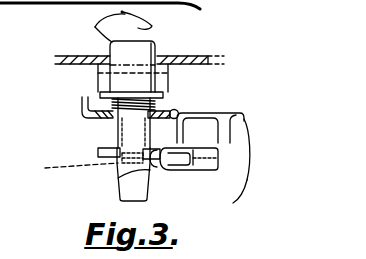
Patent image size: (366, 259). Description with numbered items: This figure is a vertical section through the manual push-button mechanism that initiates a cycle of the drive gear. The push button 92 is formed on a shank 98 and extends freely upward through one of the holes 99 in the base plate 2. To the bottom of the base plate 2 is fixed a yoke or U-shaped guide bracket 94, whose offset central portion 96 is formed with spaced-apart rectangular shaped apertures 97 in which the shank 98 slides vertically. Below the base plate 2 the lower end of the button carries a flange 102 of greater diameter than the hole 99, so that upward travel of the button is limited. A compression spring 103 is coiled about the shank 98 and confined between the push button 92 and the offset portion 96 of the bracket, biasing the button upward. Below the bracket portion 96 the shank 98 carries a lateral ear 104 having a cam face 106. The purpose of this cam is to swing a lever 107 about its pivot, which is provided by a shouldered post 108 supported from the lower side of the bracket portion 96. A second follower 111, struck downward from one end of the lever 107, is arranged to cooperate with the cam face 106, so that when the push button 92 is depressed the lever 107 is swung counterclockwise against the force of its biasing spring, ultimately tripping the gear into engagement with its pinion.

The base plate 2 is at (197, 55).
The push button 92 is at (152, 41).
The U-shaped guide bracket 94 is at (96, 77).
The offset central portion 96 is at (90, 128).
The rectangular shaped apertures 97 is at (152, 127).
The shank 98 is at (108, 135).
The holes 99 is at (118, 53).
The flange 102 is at (100, 93).
The compression spring 103 is at (160, 105).
The lateral ear 104 is at (117, 178).
The cam face 106 is at (172, 178).
The lever 107 is at (221, 203).
The shouldered post 108 is at (62, 168).
The second follower 111 is at (214, 175).